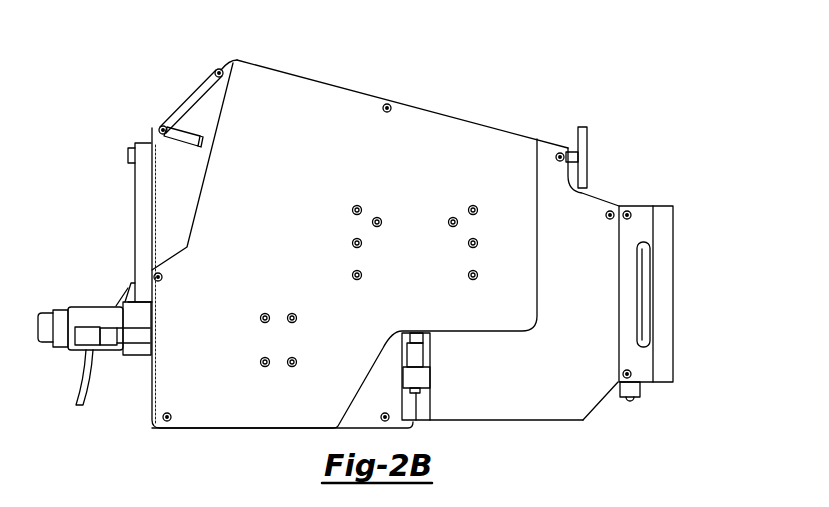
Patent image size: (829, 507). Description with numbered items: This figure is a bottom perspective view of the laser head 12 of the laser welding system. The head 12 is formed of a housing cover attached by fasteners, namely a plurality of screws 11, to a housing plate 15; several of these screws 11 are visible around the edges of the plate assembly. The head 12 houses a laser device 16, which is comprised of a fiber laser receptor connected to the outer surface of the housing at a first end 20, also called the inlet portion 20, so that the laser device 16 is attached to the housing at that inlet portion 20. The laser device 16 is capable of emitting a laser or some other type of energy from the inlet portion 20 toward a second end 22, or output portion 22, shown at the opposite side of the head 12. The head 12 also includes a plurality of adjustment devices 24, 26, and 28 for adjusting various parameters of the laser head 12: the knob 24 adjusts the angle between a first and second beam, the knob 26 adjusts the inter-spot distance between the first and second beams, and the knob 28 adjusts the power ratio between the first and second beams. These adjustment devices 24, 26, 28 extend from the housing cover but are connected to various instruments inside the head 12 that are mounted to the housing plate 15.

The screws 11 is at (220, 66).
The laser head 12 is at (664, 153).
The housing plate 15 is at (513, 141).
The laser device 16 is at (80, 308).
The first end 20 is at (149, 393).
The second end 22 is at (675, 265).
The adjustment device 24 is at (187, 128).
The adjustment device 26 is at (423, 377).
The adjustment device 28 is at (110, 332).